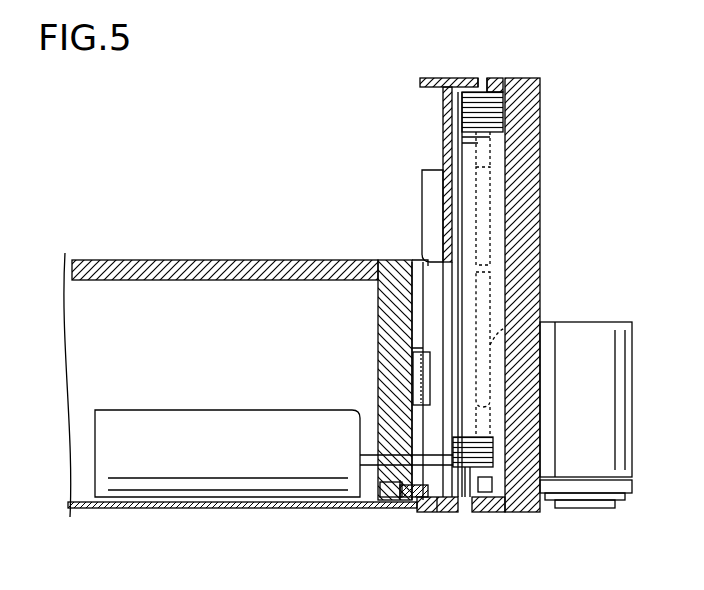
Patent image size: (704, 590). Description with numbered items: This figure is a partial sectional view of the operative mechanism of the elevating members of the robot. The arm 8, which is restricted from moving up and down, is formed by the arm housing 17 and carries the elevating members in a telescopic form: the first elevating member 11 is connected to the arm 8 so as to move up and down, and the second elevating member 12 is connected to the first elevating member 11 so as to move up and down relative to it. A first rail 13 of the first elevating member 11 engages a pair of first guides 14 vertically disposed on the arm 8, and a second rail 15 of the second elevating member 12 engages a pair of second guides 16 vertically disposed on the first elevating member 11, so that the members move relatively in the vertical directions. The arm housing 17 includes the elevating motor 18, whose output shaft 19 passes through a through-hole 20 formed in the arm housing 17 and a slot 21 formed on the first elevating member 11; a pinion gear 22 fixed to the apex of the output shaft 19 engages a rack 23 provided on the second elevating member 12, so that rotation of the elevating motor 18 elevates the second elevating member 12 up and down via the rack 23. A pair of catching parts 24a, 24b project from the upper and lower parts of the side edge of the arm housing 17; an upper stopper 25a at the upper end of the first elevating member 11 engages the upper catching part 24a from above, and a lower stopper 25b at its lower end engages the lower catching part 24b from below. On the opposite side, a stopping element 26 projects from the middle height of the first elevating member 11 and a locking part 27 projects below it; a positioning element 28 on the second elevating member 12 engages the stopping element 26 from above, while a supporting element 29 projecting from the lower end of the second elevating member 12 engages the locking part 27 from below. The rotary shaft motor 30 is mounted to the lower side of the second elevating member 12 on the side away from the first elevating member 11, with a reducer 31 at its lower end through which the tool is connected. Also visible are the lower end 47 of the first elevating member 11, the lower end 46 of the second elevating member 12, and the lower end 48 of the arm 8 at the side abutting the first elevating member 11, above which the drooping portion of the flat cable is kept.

The arm 8 is at (137, 260).
The first elevating member 11 is at (468, 78).
The second elevating member 12 is at (533, 78).
The first rail 13 is at (422, 178).
The first guides 14 is at (412, 370).
The second rail 15 is at (497, 200).
The second guides 16 is at (505, 328).
The arm housing 17 is at (300, 260).
The elevating motor 18 is at (185, 410).
The output shaft 19 is at (453, 436).
The through-hole 20 is at (370, 462).
The slot 21 is at (433, 262).
The pinion gear 22 is at (497, 445).
The rack 23 is at (458, 110).
The upper catching part 24a is at (421, 262).
The lower catching part 24b is at (373, 510).
The upper stopper 25a is at (436, 78).
The lower stopper 25b is at (420, 512).
The stopping element 26 is at (490, 268).
The locking part 27 is at (477, 512).
The positioning element 28 is at (497, 78).
The supporting element 29 is at (482, 512).
The rotary shaft motor 30 is at (628, 365).
The reducer 31 is at (625, 487).
The lower end of the second elevating member 46 is at (527, 513).
The lower end of the first elevating member 47 is at (437, 512).
The lower end of the arm 48 is at (405, 503).